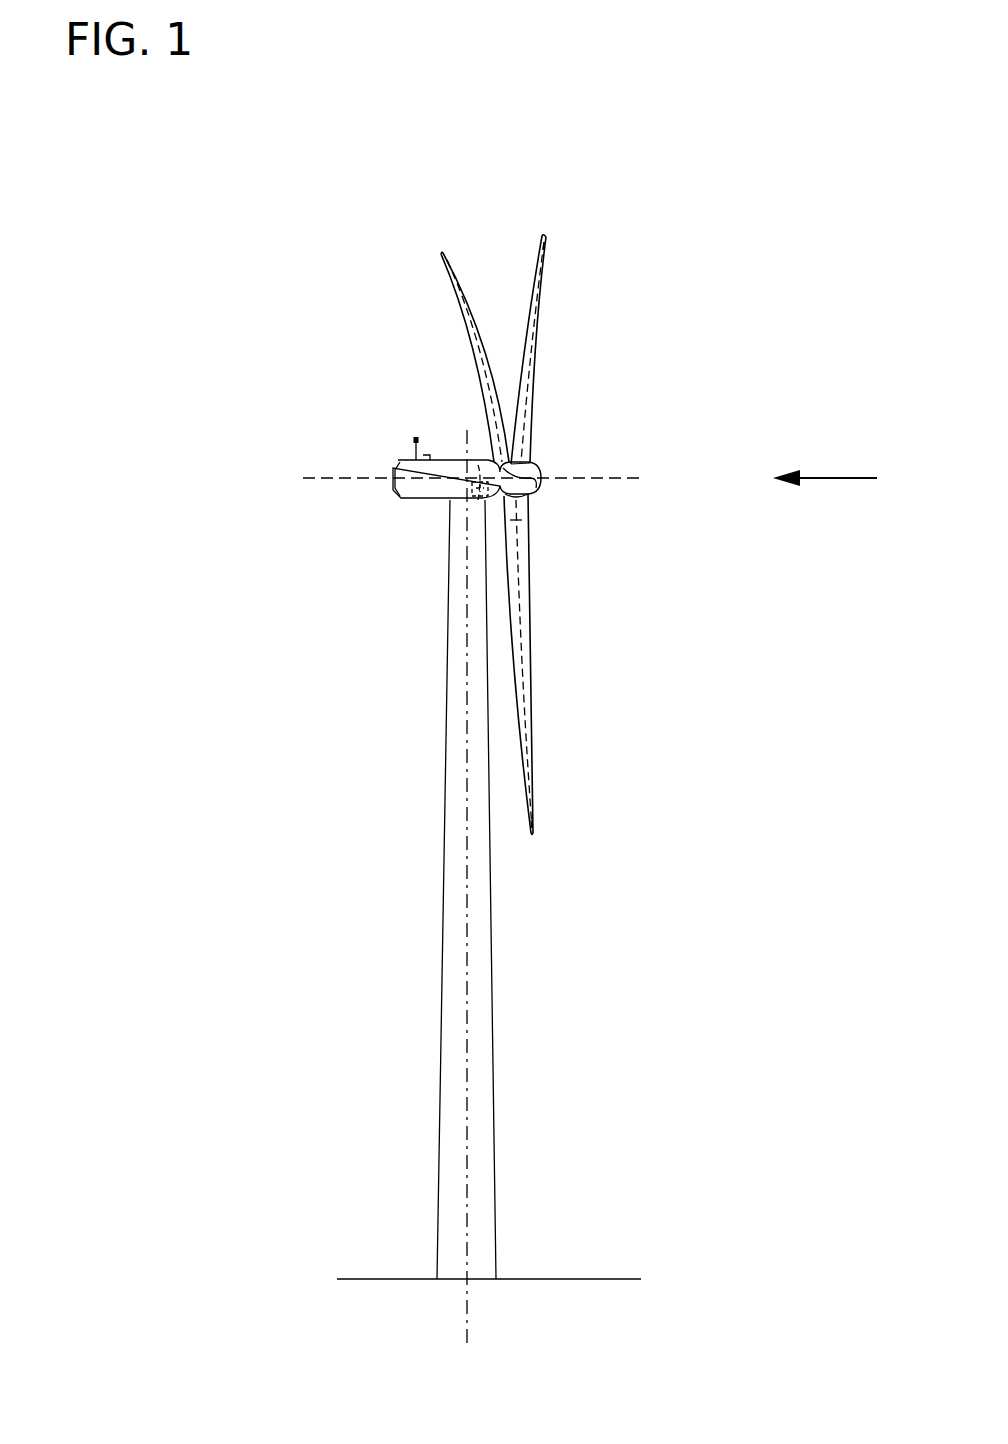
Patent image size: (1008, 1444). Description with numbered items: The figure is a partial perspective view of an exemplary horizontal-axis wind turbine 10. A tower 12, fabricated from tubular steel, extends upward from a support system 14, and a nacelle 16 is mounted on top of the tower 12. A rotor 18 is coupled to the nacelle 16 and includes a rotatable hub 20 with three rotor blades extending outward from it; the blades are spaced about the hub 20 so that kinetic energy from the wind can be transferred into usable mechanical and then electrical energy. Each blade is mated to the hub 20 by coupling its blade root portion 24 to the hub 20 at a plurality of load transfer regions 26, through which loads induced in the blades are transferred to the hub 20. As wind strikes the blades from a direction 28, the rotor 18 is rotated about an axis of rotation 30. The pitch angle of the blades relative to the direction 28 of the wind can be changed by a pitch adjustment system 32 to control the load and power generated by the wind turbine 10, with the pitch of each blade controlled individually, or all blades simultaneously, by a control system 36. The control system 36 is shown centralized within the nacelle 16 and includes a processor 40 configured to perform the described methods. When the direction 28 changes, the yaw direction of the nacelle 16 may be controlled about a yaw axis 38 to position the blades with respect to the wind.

The wind turbine 10 is at (218, 250).
The tower 12 is at (443, 1047).
The support system 14 is at (397, 1279).
The nacelle 16 is at (420, 500).
The rotor 18 is at (525, 527).
The rotatable hub 20 is at (541, 470).
The blade root portion 24 is at (526, 440).
The load transfer region 26 is at (520, 495).
The direction 28 is at (846, 478).
The axis of rotation 30 is at (605, 478).
The pitch adjustment system 32 is at (513, 530).
The control system 36 is at (470, 516).
The yaw axis 38 is at (467, 930).
The processor 40 is at (478, 470).